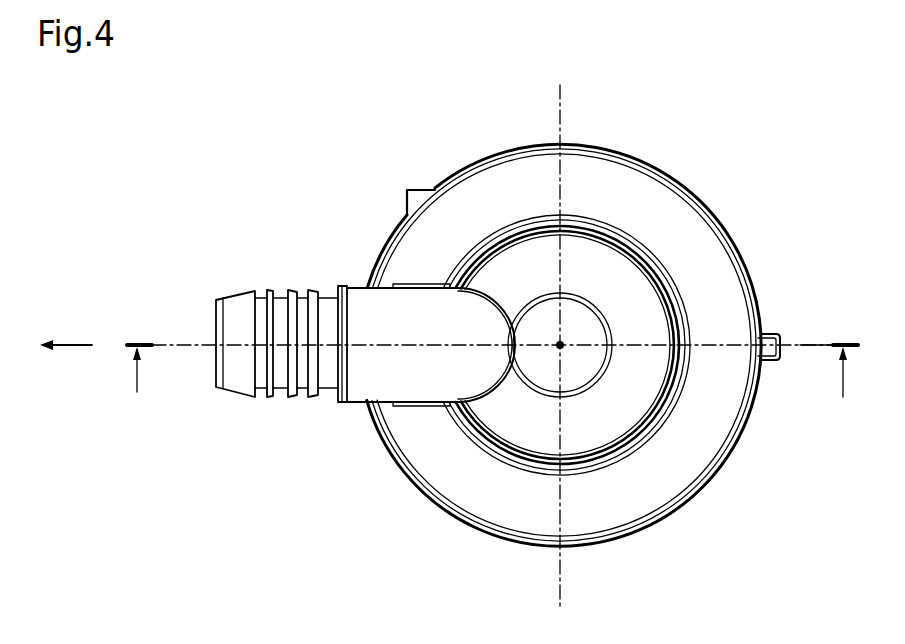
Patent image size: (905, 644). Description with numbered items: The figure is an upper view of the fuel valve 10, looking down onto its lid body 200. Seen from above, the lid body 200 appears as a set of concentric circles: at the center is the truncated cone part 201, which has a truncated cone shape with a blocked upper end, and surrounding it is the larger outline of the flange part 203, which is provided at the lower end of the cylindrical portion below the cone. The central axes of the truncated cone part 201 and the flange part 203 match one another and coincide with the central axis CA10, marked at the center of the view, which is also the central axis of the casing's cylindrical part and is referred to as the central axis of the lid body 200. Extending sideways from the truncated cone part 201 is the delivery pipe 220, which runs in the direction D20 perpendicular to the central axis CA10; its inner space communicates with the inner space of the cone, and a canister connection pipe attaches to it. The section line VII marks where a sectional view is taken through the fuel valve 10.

The fuel valve 10 is at (688, 162).
The lid body 200 is at (672, 217).
The truncated cone part 201 is at (625, 403).
The flange part 203 is at (627, 497).
The delivery pipe 220 is at (238, 388).
The central axis CA10 is at (560, 345).
The direction D20 is at (70, 346).
The section line VII- VII is at (491, 388).